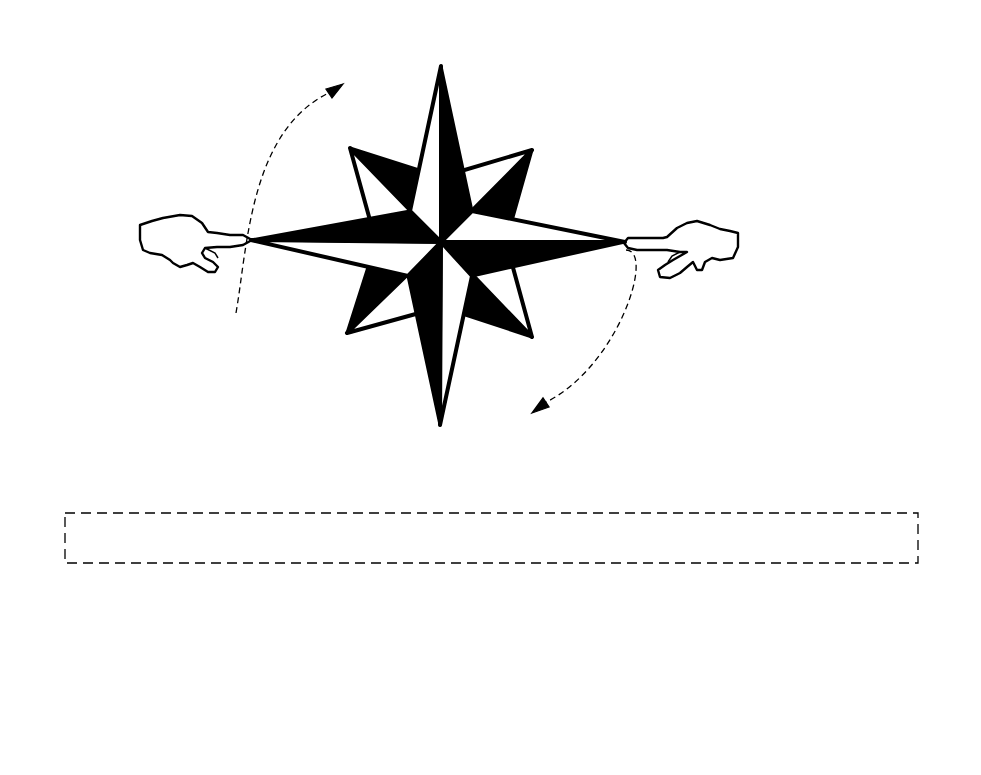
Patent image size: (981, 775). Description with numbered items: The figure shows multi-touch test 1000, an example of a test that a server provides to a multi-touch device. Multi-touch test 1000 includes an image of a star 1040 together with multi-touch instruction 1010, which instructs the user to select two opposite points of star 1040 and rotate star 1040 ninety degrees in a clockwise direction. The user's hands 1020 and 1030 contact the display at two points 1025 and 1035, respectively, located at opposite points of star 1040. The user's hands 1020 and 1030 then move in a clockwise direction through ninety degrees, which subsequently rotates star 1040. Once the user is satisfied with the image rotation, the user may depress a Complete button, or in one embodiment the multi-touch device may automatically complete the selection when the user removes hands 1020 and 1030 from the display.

The multi-touch test 1000 is at (160, 26).
The multi-touch instruction 1010 is at (150, 566).
The user's hand 1020 is at (136, 223).
The point 1025 is at (257, 204).
The user's hand 1030 is at (740, 232).
The point 1035 is at (627, 240).
The star 1040 is at (457, 128).